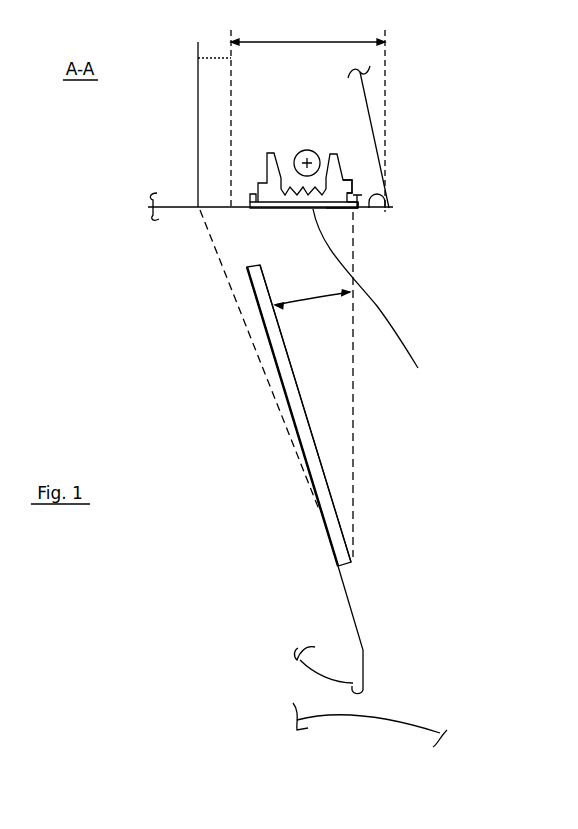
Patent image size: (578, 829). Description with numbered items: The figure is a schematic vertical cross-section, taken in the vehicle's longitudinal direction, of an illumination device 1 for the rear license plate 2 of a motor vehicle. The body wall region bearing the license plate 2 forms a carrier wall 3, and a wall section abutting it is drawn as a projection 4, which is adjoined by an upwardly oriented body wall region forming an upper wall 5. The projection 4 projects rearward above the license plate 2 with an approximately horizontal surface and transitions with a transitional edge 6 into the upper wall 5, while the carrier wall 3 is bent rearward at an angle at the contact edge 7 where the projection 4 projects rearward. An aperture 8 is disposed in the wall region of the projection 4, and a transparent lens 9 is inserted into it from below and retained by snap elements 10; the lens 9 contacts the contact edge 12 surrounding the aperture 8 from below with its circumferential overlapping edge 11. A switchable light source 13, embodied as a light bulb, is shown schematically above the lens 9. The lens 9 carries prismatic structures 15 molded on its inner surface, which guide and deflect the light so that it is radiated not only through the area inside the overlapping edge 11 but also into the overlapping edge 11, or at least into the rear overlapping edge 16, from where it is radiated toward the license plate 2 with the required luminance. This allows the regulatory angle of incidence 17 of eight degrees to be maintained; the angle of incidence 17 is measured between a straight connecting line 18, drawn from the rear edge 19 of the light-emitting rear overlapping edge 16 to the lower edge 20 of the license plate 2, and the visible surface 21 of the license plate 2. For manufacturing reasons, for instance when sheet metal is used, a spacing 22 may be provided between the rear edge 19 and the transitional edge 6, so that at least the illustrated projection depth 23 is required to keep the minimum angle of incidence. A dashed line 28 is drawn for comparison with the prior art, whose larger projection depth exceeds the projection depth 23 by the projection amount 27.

The illumination device 1 is at (504, 69).
The license plate 2 is at (300, 400).
The carrier wall 3 is at (257, 315).
The projection 4 is at (376, 249).
The upper wall 5 is at (370, 118).
The transitional edge 6 is at (394, 214).
The contact edge 7 is at (220, 219).
The aperture 8 is at (244, 173).
The lens 9 is at (341, 208).
The snap elements 10 is at (266, 153).
The overlapping edge 11 is at (258, 208).
The contact edge 12 is at (351, 187).
The light source 13 is at (305, 150).
The prismatic structures 15 is at (291, 184).
The rear overlapping edge 16 is at (357, 215).
The angle of incidence 17 is at (300, 300).
The connecting line 18 is at (353, 452).
The rear edge 19 is at (362, 220).
The lower edge 20 is at (360, 565).
The visible surface 21 is at (314, 417).
The spacing 22 is at (370, 195).
The projection depth 23 is at (336, 42).
The projection amount 27 is at (217, 50).
The dashed line 28 is at (270, 392).